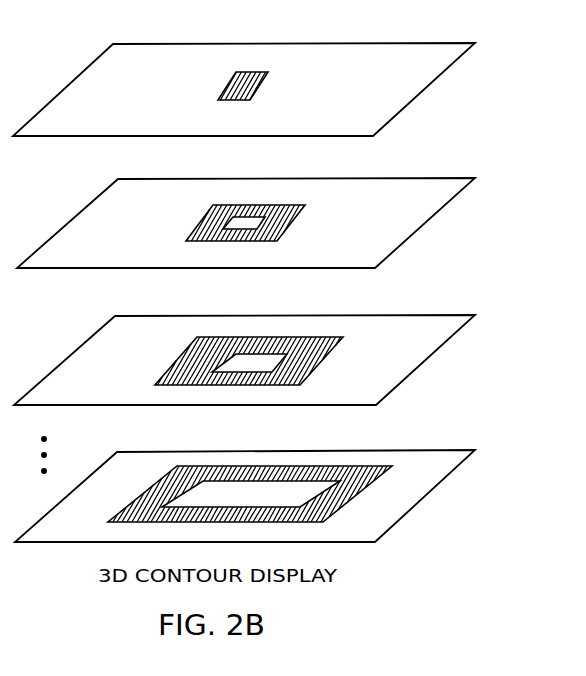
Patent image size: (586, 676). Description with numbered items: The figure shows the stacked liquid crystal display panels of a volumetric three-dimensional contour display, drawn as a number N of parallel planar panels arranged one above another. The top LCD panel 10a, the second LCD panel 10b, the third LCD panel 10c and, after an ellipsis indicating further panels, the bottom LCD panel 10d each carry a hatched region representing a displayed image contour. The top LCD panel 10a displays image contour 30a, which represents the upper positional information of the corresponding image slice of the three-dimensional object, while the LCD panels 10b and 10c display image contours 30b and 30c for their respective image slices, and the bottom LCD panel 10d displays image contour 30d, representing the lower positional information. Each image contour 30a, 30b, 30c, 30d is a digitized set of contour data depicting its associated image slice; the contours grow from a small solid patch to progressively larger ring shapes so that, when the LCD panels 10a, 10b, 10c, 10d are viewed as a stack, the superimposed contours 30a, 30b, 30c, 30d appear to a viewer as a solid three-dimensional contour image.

The LCD panel 10a is at (435, 80).
The LCD panel 10b is at (443, 208).
The LCD panel 10c is at (445, 345).
The LCD panel 10d is at (443, 482).
The image contour 30a is at (240, 72).
The image contour 30b is at (240, 205).
The image contour 30c is at (262, 337).
The image contour 30d is at (263, 466).